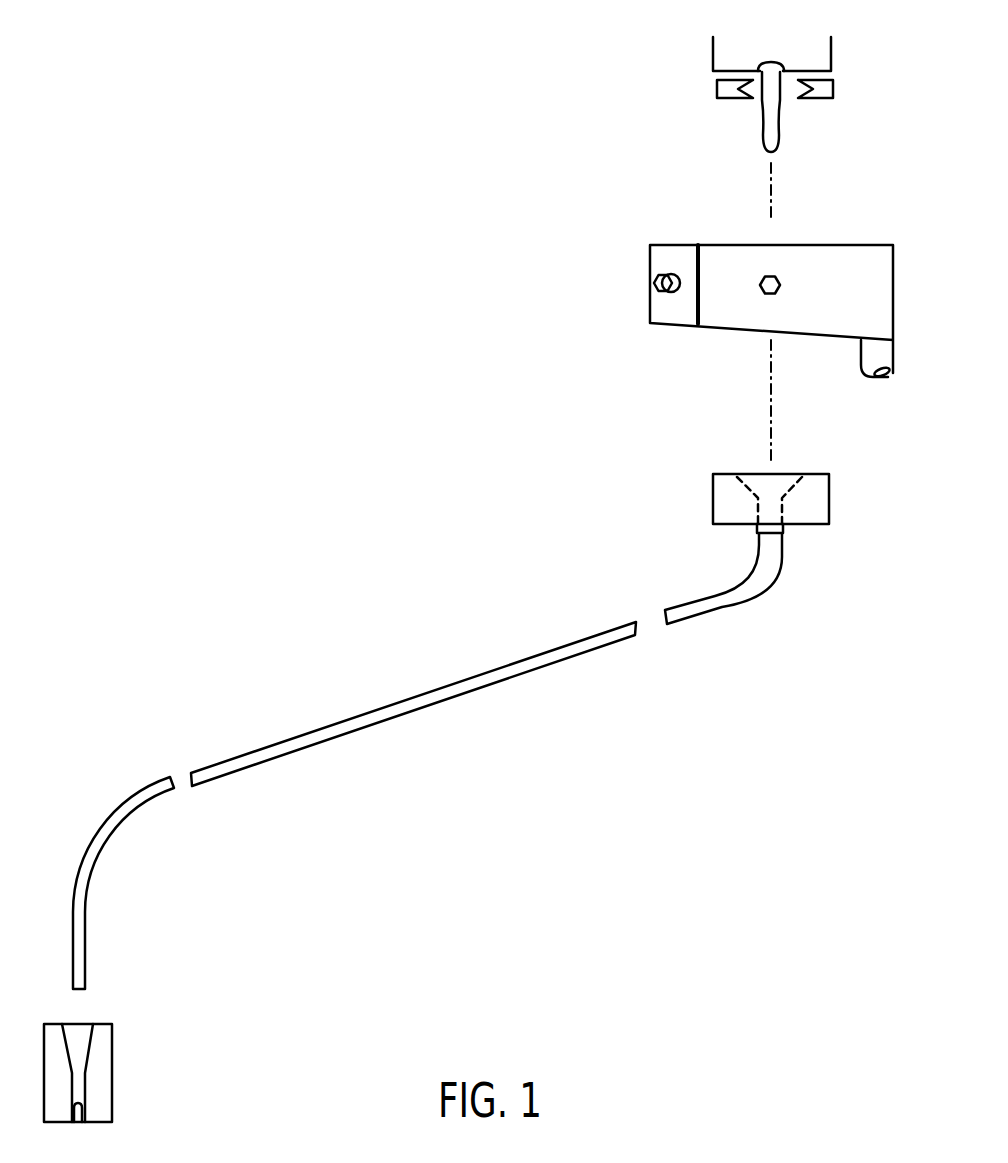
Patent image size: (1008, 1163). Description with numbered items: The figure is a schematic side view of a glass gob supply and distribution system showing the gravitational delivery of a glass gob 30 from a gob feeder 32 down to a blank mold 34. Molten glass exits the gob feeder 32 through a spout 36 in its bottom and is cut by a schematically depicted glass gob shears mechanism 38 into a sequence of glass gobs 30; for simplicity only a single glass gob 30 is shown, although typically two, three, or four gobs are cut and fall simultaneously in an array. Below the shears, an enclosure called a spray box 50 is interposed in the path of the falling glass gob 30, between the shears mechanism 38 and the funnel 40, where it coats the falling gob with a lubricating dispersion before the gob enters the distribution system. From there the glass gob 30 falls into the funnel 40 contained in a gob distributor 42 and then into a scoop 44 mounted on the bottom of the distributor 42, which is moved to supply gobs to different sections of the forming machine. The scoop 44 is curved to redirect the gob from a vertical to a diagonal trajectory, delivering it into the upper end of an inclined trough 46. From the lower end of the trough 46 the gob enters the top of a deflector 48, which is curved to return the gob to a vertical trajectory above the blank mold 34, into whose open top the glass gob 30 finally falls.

The glass gob 30 is at (781, 118).
The gob feeder 32 is at (713, 57).
The blank mold 34 is at (112, 1073).
The spout 36 is at (783, 68).
The glass gob shears mechanism 38 is at (733, 100).
The funnel 40 is at (790, 472).
The gob distributor 42 is at (713, 500).
The scoop 44 is at (702, 612).
The inclined trough 46 is at (413, 710).
The deflector 48 is at (97, 860).
The spray box 50 is at (712, 332).